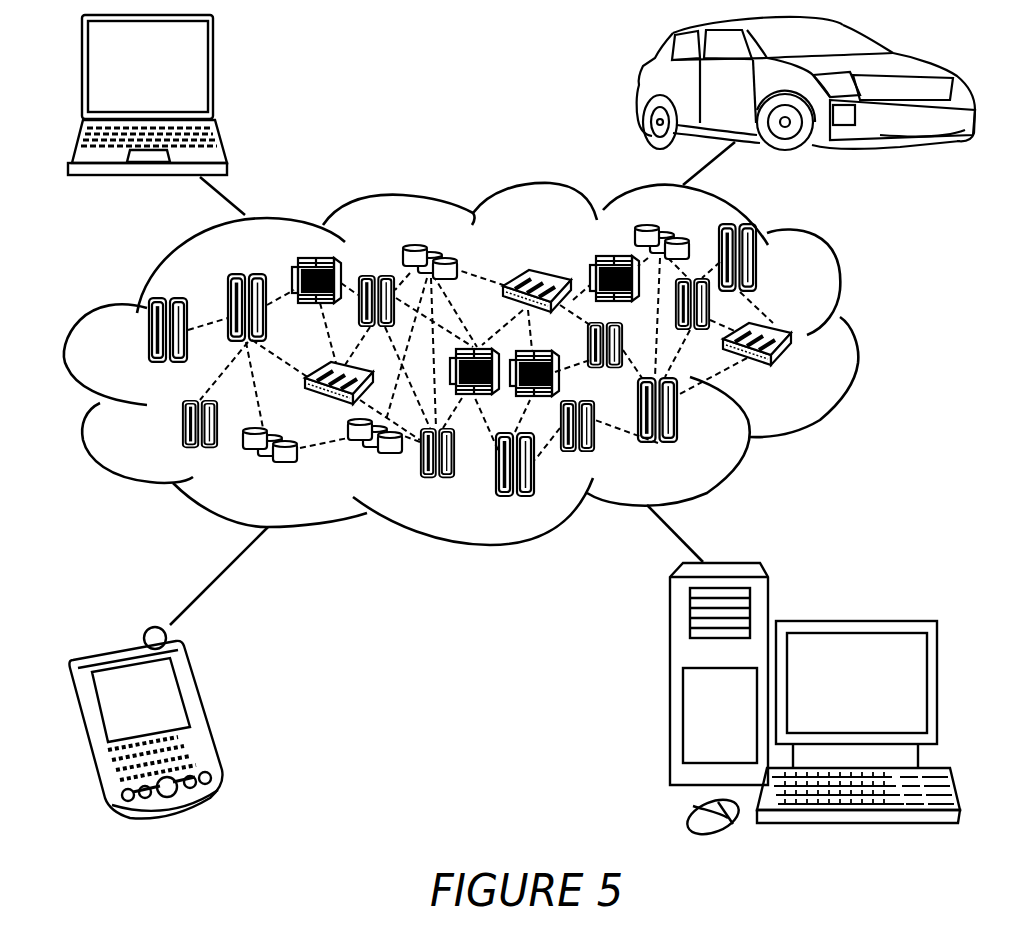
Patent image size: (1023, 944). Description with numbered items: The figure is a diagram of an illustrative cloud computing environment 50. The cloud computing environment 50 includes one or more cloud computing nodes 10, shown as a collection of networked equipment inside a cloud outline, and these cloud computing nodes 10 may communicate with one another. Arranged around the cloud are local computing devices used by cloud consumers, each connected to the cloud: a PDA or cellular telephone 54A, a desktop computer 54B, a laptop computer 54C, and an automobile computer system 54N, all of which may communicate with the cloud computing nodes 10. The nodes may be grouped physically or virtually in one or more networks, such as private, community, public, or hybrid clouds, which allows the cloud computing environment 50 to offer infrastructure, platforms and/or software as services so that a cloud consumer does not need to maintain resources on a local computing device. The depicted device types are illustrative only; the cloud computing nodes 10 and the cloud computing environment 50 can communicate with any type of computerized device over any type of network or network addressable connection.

The cloud computing environment 50 is at (857, 342).
The cloud computing nodes 10 is at (521, 360).
The PDA or cellular telephone 54A is at (205, 712).
The desktop computer 54B is at (852, 620).
The laptop computer 54C is at (214, 72).
The automobile computer system 54N is at (640, 90).